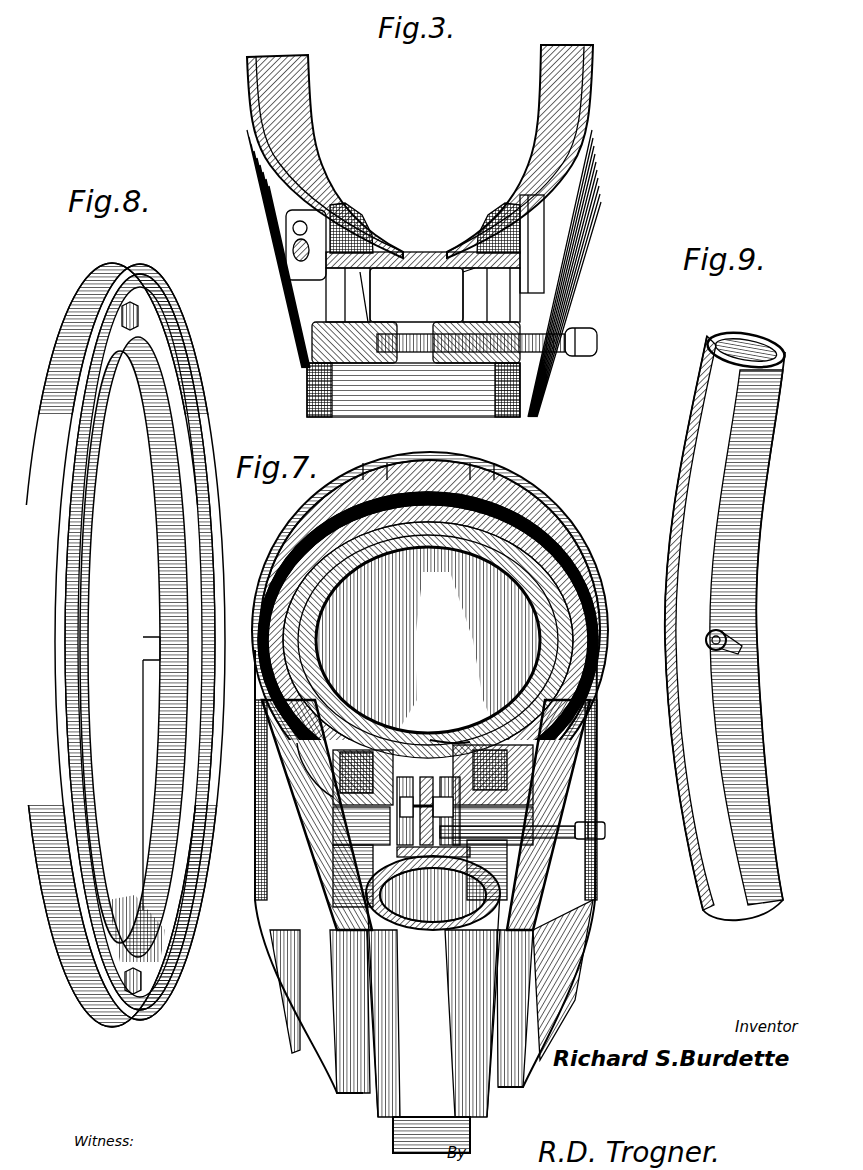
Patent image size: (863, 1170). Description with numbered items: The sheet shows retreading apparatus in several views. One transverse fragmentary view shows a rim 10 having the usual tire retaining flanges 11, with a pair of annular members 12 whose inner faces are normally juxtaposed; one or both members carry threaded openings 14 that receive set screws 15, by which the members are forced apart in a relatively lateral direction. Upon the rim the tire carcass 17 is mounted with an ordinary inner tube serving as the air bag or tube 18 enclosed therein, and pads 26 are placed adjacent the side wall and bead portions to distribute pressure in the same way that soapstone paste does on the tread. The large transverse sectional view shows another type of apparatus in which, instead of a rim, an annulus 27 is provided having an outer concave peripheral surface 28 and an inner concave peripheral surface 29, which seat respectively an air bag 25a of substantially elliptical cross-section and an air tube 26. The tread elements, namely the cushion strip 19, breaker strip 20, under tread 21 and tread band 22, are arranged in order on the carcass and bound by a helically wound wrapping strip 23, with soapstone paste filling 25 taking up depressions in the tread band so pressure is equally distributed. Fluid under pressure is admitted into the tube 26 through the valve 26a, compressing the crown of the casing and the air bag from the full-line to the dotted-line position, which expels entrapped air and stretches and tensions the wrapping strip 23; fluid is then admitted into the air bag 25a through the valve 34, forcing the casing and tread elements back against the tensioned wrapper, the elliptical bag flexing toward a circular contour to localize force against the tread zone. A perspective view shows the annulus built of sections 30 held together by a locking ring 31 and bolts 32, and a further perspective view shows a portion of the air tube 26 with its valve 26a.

In FIG. 3, the rim 10 is at (426, 270).
In FIG. 3, the tire retaining flanges 11 is at (288, 229).
In FIG. 3, the annular members 12 is at (410, 345).
In FIG. 3, the threaded openings 14 is at (448, 372).
In FIG. 3, the set screws 15 is at (600, 348).
In FIG. 3, the tire carcass 17 is at (300, 92).
In FIG. 7, the tire carcass 17 is at (580, 665).
In FIG. 3, the air bag or tube 18 is at (540, 86).
In FIG. 7, the cushion strip 19 is at (437, 515).
In FIG. 7, the breaker strip 20 is at (292, 520).
In FIG. 7, the under tread 21 is at (583, 570).
In FIG. 7, the tread band 22 is at (523, 474).
In FIG. 3, the wrapping strip 23 is at (590, 210).
In FIG. 7, the wrapping strip 23 is at (563, 913).
In FIG. 7, the soapstone paste filling 25 is at (266, 570).
In FIG. 7, the air bag 25a is at (493, 710).
In FIG. 3, the pads 26 is at (247, 150).
In FIG. 7, the pads 26 is at (433, 986).
In FIG. 9, the pads 26 is at (753, 600).
In FIG. 9, the valve 26a is at (743, 660).
In FIG. 7, the annulus 27 is at (428, 760).
In FIG. 8, the annulus 27 is at (124, 785).
In FIG. 7, the outer concave peripheral surface 28 is at (458, 746).
In FIG. 7, the inner concave peripheral surface 29 is at (350, 845).
In FIG. 8, the sections 30 is at (183, 353).
In FIG. 8, the locking ring 31 is at (157, 953).
In FIG. 8, the bolts 32 is at (138, 311).
In FIG. 7, the valve 34 is at (605, 830).